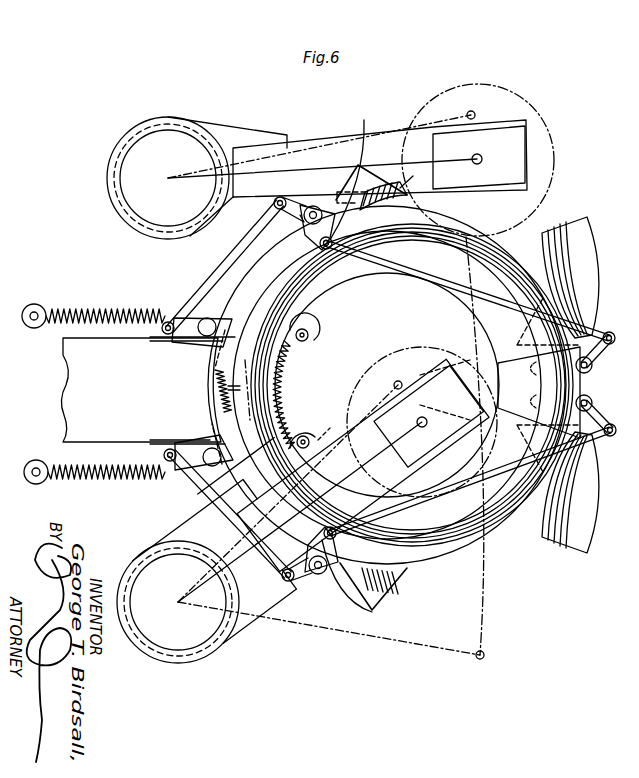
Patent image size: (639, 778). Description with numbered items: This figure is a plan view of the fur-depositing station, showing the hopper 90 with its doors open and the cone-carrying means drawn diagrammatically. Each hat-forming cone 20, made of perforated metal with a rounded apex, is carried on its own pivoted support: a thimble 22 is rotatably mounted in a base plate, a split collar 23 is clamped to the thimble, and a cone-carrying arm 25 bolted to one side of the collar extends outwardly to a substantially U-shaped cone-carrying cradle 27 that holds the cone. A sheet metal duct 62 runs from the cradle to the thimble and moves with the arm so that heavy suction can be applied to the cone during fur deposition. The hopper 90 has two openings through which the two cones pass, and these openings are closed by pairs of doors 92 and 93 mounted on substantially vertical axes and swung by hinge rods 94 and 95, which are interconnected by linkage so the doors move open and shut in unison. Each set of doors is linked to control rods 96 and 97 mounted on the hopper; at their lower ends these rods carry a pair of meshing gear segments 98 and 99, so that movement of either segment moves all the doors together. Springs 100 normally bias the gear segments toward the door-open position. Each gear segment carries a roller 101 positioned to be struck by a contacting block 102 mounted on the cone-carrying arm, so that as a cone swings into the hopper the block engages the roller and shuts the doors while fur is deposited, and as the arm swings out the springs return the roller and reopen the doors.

The forming cone 20 is at (525, 108).
The thimble 22 is at (172, 118).
The split collar 23 is at (232, 133).
The cone-carrying arm 25 is at (316, 148).
The cone-carrying cradle 27 is at (497, 127).
The sheet metal duct 62 is at (168, 368).
The hopper 90 is at (390, 385).
The doors 92 is at (584, 550).
The doors 93 is at (595, 254).
The hinge rod 94 is at (318, 576).
The hinge rod 95 is at (303, 224).
The control rod 96 is at (212, 449).
The control rod 97 is at (214, 338).
The gear segment 98 is at (306, 392).
The gear segment 99 is at (300, 363).
The spring 100 is at (114, 312).
The roller 101 is at (310, 334).
The contacting block 102 is at (380, 302).